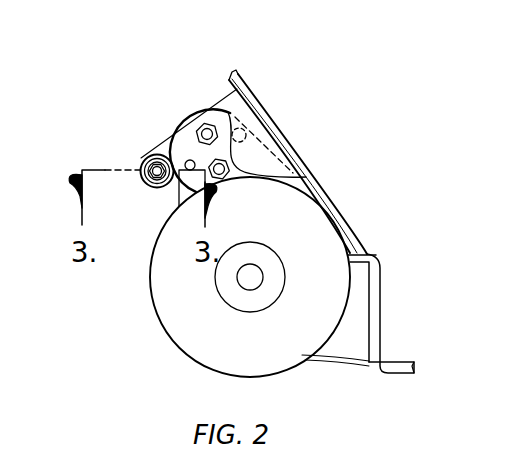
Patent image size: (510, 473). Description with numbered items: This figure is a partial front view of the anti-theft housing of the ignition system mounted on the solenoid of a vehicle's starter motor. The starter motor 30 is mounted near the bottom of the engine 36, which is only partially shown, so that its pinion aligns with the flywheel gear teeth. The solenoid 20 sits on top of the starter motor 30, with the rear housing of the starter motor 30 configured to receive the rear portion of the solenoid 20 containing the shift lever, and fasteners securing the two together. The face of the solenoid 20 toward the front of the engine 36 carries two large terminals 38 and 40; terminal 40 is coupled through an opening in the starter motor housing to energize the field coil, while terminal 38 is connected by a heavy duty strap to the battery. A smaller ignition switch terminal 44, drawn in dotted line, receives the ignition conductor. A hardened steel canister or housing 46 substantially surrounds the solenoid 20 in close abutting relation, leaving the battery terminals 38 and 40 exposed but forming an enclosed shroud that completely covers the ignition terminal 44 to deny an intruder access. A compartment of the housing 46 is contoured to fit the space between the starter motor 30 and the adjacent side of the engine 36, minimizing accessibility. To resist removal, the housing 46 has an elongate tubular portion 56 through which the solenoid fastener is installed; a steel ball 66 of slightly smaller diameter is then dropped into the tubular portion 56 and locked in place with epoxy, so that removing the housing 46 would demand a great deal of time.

The solenoid 20 is at (150, 152).
The starter motor 30 is at (167, 328).
The engine 36 is at (242, 101).
The terminal 38 is at (186, 150).
The terminal 40 is at (225, 178).
The ignition switch terminal 44 is at (262, 121).
The housing 46 is at (252, 162).
The tubular portion 56 is at (144, 163).
The steel ball 66 is at (150, 160).